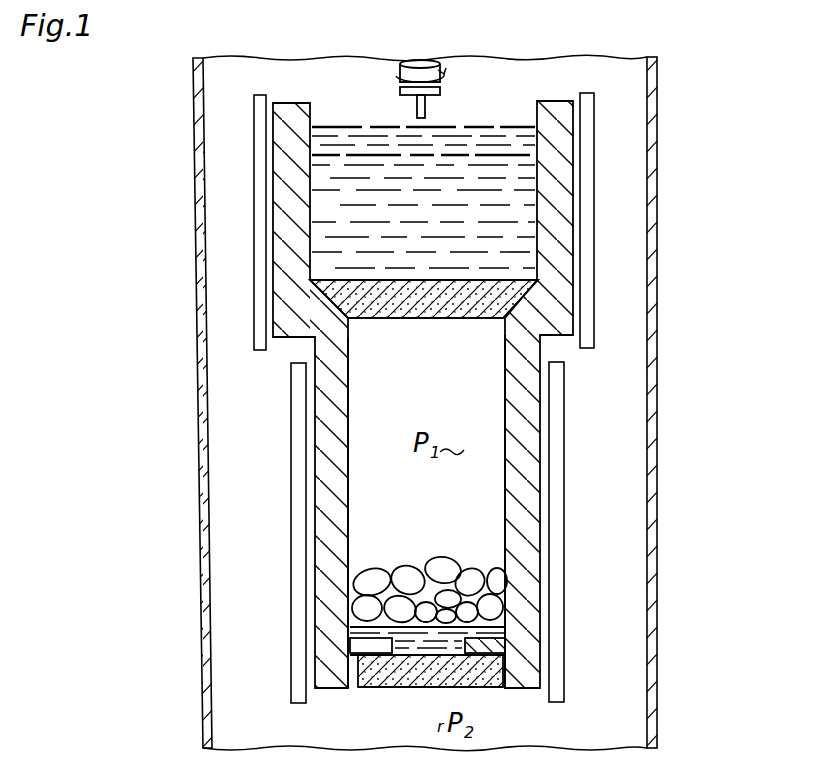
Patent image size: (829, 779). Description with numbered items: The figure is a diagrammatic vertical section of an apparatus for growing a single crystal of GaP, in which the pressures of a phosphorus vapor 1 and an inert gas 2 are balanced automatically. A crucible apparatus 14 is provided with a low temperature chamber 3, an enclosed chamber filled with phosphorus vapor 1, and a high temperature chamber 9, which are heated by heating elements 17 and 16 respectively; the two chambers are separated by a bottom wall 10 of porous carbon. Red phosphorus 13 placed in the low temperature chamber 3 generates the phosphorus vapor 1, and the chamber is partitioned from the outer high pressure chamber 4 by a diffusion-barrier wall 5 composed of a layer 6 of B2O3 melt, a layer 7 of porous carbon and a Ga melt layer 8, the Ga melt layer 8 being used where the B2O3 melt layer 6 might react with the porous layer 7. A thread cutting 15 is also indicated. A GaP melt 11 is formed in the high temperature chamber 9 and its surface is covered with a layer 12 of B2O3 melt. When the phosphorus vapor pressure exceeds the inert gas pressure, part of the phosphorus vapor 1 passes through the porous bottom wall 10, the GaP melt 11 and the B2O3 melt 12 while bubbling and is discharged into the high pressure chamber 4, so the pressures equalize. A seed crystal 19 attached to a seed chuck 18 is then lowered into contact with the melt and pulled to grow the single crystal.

The phosphorus vapor 1 is at (468, 402).
The inert gas 2 is at (508, 718).
The low temperature chamber 3 is at (510, 457).
The high pressure chamber 4 is at (657, 578).
The diffusion-barrier wall 5 is at (365, 690).
The B2O3 melt layer 6 is at (505, 630).
The porous carbon layer 7 is at (405, 690).
The Ga melt layer 8 is at (390, 648).
The high temperature chamber 9 is at (545, 183).
The bottom wall 10 is at (360, 300).
The GaP melt 11 is at (330, 188).
The B2O3 melt layer 12 is at (470, 137).
The red phosphorus 13 is at (495, 582).
The crucible apparatus 14 is at (570, 283).
The thread cutting 15 is at (348, 678).
The heating element 16 is at (590, 228).
The heating element 17 is at (555, 508).
The seed chuck 18 is at (428, 62).
The seed crystal 19 is at (417, 106).